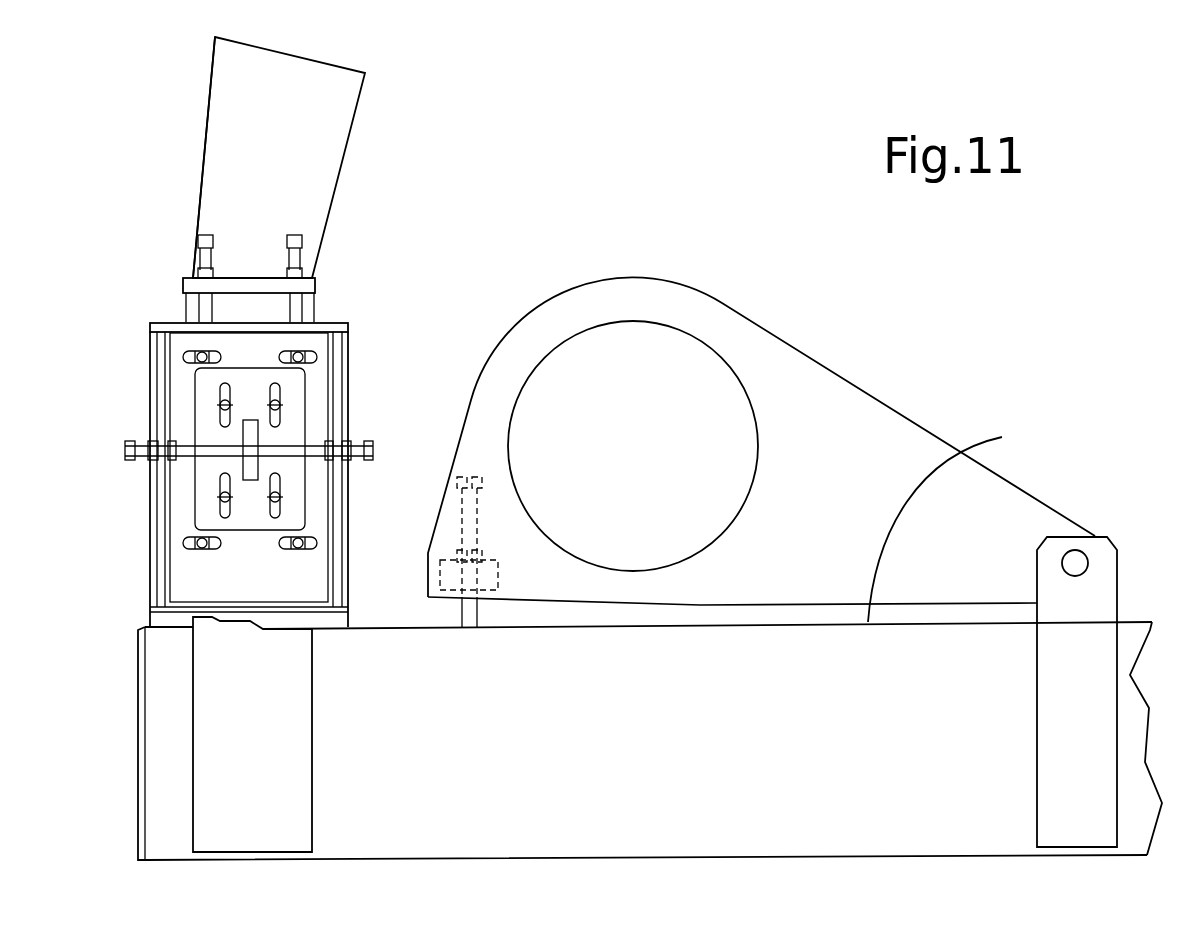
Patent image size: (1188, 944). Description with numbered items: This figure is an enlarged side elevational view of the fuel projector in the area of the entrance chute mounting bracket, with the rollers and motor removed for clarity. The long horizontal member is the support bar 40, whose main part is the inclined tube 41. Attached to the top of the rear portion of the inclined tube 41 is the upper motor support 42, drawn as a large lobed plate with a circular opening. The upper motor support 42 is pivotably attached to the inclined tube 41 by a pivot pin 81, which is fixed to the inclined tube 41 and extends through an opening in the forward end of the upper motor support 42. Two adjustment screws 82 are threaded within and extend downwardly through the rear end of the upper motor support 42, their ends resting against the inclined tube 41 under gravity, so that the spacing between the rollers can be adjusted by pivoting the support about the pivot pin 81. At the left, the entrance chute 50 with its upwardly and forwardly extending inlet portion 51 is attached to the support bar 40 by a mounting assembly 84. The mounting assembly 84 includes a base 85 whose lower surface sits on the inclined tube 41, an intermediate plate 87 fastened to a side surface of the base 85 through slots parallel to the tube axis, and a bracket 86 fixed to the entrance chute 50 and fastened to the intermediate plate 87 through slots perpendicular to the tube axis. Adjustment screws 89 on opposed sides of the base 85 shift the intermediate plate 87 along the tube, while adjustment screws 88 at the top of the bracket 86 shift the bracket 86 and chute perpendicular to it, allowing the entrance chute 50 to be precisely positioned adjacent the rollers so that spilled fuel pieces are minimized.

The support bar 40 is at (138, 713).
The inclined tube 41 is at (958, 522).
The upper motor support 42 is at (847, 375).
The entrance chute 50 is at (305, 58).
The inlet portion 51 is at (207, 118).
The pivot pin 81 is at (1087, 550).
The adjustment screws 82 is at (460, 508).
The mounting assembly 84 is at (350, 363).
The base 85 is at (340, 322).
The bracket 86 is at (315, 283).
The intermediate plate 87 is at (200, 412).
The adjustment screws 88 is at (200, 233).
The adjustment screws 89 is at (368, 441).